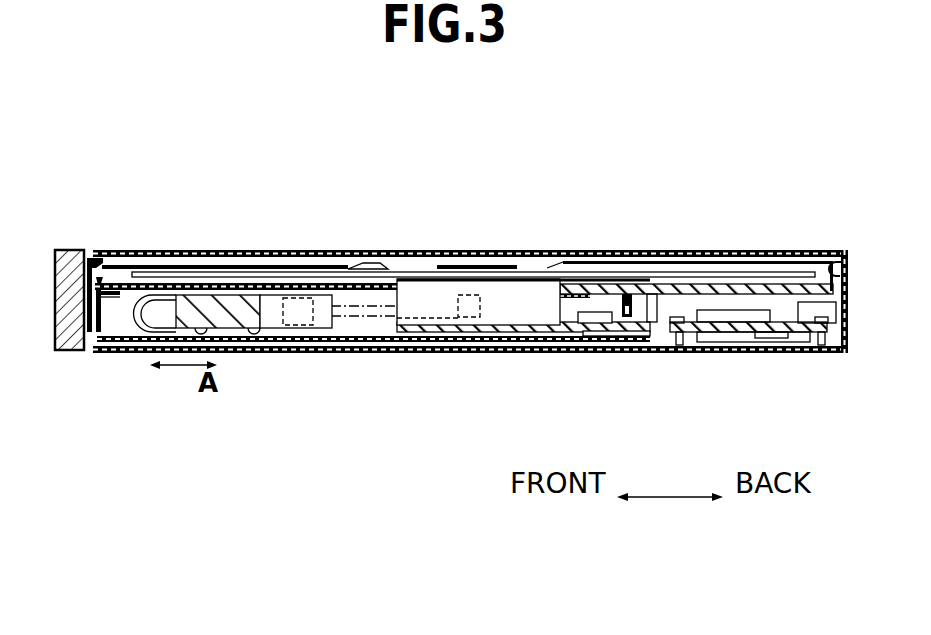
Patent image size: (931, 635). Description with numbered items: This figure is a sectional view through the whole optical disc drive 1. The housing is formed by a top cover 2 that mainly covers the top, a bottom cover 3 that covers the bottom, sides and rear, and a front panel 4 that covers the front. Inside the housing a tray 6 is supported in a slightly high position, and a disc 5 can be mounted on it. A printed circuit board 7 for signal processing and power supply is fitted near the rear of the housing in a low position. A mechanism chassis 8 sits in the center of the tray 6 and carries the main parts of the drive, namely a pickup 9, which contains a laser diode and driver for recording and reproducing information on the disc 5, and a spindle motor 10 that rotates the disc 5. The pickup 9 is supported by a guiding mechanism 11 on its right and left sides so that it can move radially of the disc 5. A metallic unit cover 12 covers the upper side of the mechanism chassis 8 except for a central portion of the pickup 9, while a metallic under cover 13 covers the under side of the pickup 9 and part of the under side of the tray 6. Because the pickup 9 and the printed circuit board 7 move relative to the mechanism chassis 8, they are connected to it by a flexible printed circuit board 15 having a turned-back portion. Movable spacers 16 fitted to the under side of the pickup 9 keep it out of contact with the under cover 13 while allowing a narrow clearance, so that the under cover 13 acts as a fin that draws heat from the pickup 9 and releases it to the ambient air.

The optical disc drive 1 is at (441, 152).
The top cover 2 is at (560, 251).
The bottom cover 3 is at (647, 350).
The front panel 4 is at (75, 349).
The disc 5 is at (685, 277).
The tray 6 is at (773, 288).
The printed circuit board 7 is at (733, 331).
The mechanism chassis 8 is at (110, 293).
The pickup 9 is at (272, 318).
The spindle motor 10 is at (500, 303).
The guiding mechanism 11 is at (372, 310).
The unit cover 12 is at (155, 285).
The under cover 13 is at (375, 348).
The flexible printed circuit board 15 is at (132, 298).
The movable spacers 16 is at (201, 334).